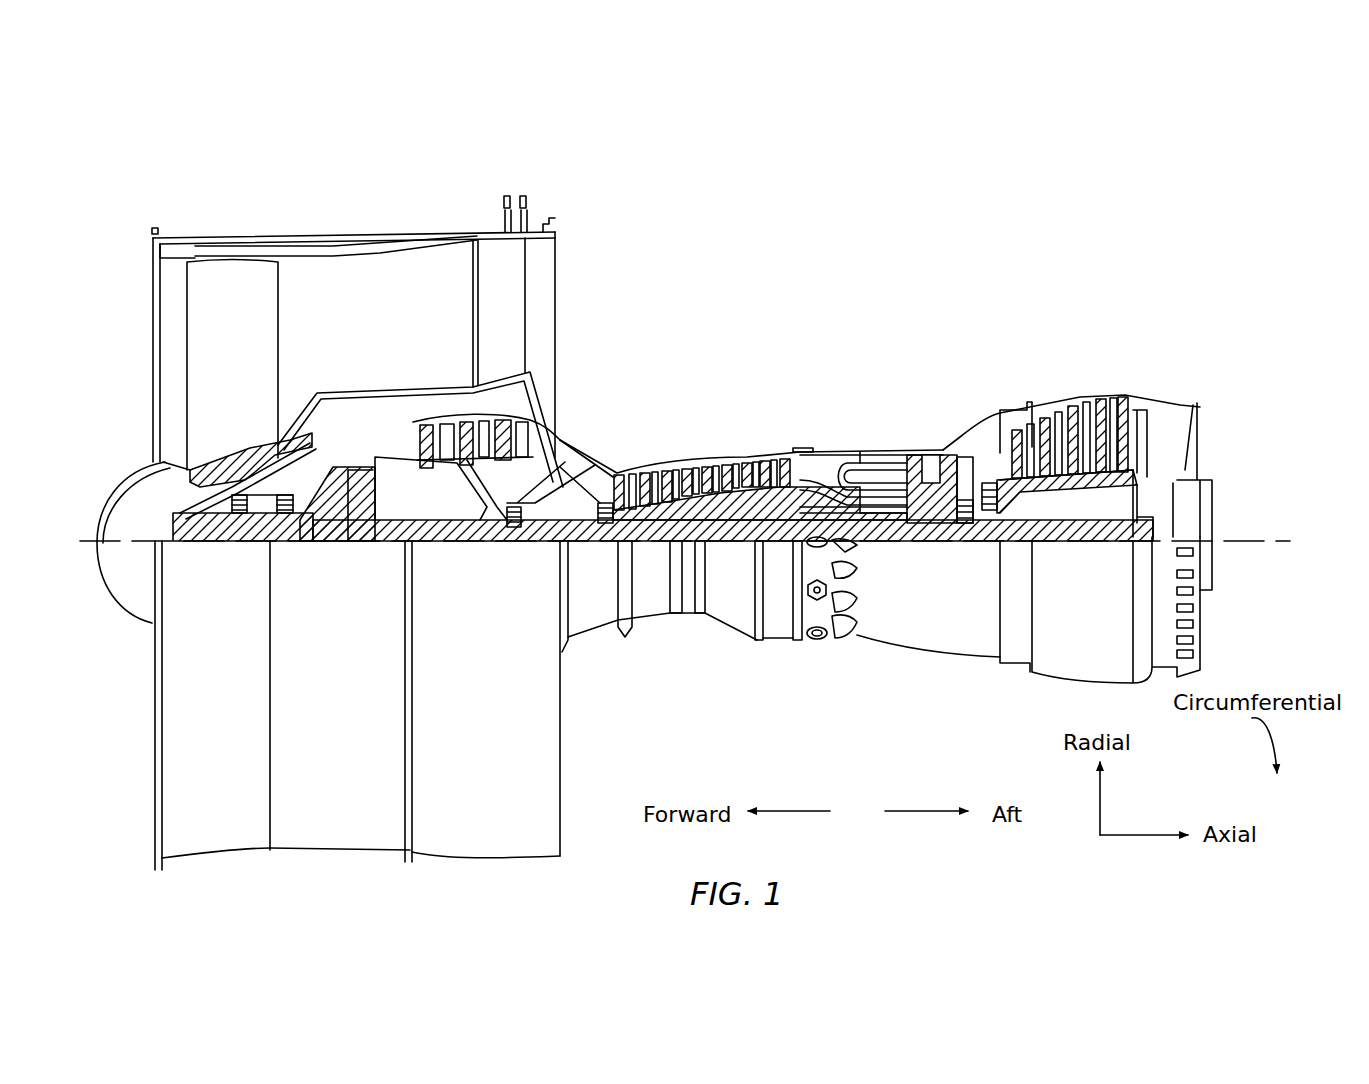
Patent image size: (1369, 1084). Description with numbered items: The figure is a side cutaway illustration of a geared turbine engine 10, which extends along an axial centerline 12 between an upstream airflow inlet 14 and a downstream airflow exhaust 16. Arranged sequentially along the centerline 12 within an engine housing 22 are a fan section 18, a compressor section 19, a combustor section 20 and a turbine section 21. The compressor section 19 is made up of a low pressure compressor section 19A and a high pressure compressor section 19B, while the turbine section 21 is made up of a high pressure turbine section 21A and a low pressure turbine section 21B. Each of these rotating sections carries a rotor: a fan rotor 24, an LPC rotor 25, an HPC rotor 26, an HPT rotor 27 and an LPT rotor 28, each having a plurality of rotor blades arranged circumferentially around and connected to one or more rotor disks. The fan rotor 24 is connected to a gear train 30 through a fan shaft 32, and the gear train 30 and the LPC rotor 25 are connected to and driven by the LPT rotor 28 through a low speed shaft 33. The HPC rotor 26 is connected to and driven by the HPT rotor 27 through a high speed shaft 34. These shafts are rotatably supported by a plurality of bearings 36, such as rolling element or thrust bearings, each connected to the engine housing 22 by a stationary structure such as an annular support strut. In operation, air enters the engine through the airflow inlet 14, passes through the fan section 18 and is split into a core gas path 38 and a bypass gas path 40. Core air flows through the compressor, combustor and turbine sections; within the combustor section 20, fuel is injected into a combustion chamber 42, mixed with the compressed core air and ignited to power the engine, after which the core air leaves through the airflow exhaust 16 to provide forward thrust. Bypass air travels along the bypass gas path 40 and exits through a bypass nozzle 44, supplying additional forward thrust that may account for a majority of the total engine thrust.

The geared turbine engine 10 is at (118, 214).
The axial centerline 12 is at (1262, 548).
The airflow inlet 14 is at (153, 298).
The airflow exhaust 16 is at (1205, 430).
The fan section 18 is at (320, 213).
The compressor section 19 is at (777, 150).
The low pressure compressor section 19A is at (558, 197).
The high pressure compressor section 19B is at (777, 384).
The combustor section 20 is at (898, 377).
The turbine section 21 is at (1160, 310).
The high pressure turbine section 21A is at (980, 377).
The low pressure turbine section 21B is at (1160, 377).
The engine housing 22 is at (582, 656).
The fan rotor 24 is at (177, 462).
The LPC rotor 25 is at (468, 490).
The HPC rotor 26 is at (735, 500).
The HPT rotor 27 is at (925, 520).
The LPT rotor 28 is at (1073, 483).
The gear train 30 is at (358, 543).
The fan shaft 32 is at (222, 545).
The low speed shaft 33 is at (785, 545).
The high speed shaft 34 is at (868, 520).
The bearings 36 is at (280, 512).
The core gas path 38 is at (578, 470).
The bypass gas path 40 is at (408, 323).
The combustion chamber 42 is at (858, 465).
The bypass nozzle 44 is at (555, 287).